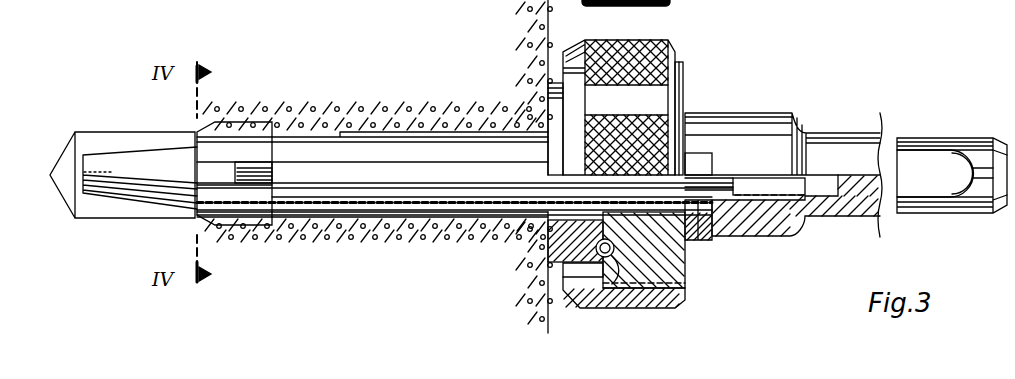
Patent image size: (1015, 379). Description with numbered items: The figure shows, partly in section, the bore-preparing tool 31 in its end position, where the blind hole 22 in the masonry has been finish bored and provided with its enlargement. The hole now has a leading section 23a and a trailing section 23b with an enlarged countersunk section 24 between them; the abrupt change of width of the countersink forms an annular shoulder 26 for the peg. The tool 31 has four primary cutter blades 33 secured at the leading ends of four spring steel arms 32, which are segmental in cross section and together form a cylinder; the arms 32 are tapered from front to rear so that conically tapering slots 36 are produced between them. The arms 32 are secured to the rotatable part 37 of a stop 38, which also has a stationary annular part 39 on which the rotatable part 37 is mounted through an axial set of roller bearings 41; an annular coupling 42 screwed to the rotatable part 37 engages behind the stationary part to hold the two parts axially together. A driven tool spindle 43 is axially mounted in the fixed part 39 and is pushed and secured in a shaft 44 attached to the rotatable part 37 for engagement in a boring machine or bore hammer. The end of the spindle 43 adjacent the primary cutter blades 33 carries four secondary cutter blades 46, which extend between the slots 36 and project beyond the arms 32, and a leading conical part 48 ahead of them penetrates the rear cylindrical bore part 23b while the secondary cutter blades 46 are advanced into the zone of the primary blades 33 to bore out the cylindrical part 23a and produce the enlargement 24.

The blind hole 22 is at (347, 136).
The leading section 23a is at (397, 134).
The trailing section 23b is at (108, 138).
The enlarged countersunk section 24 is at (243, 122).
The annular shoulder 26 is at (283, 222).
The tool 31 is at (738, 110).
The arms 32 is at (372, 155).
The primary cutter blades 33 is at (262, 222).
The slots 36 is at (420, 180).
The rotatable part 37 is at (683, 70).
The stop 38 is at (665, 51).
The stationary annular part 39 is at (540, 240).
The roller bearings 41 is at (588, 290).
The annular coupling 42 is at (641, 290).
The tool spindle 43 is at (700, 203).
The shaft 44 is at (900, 140).
The secondary cutter blades 46 is at (258, 164).
The leading conical part 48 is at (126, 182).